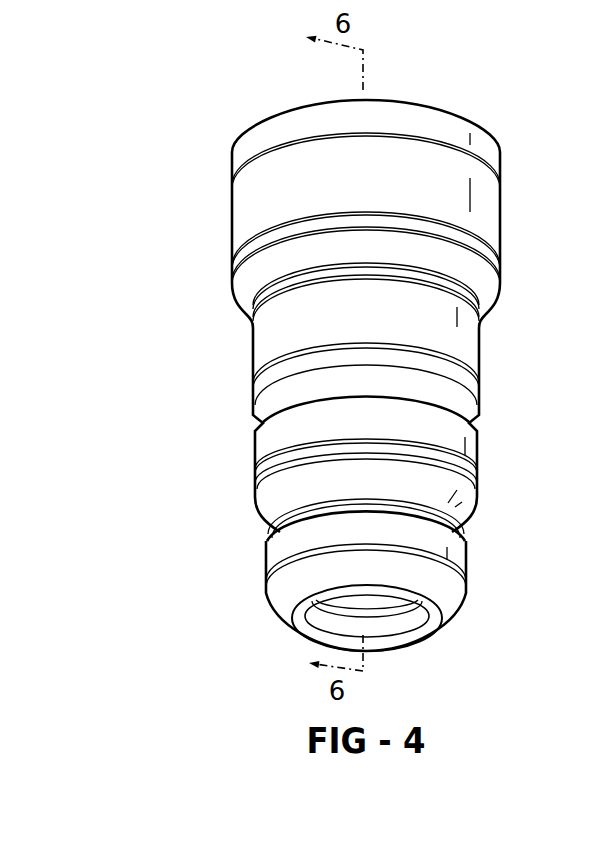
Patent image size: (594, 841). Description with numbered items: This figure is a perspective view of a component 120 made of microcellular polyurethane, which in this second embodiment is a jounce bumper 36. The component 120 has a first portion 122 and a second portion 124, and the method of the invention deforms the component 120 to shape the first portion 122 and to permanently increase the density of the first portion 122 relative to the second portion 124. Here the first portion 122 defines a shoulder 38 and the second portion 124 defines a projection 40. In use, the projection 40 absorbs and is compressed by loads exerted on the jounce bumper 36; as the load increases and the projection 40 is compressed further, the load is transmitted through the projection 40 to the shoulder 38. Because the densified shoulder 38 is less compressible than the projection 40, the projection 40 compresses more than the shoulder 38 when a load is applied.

The jounce bumper 36 is at (468, 336).
The shoulder 38 is at (248, 150).
The projection 40 is at (453, 504).
The component 120 is at (265, 355).
The first portion 122 is at (263, 140).
The second portion 124 is at (262, 453).